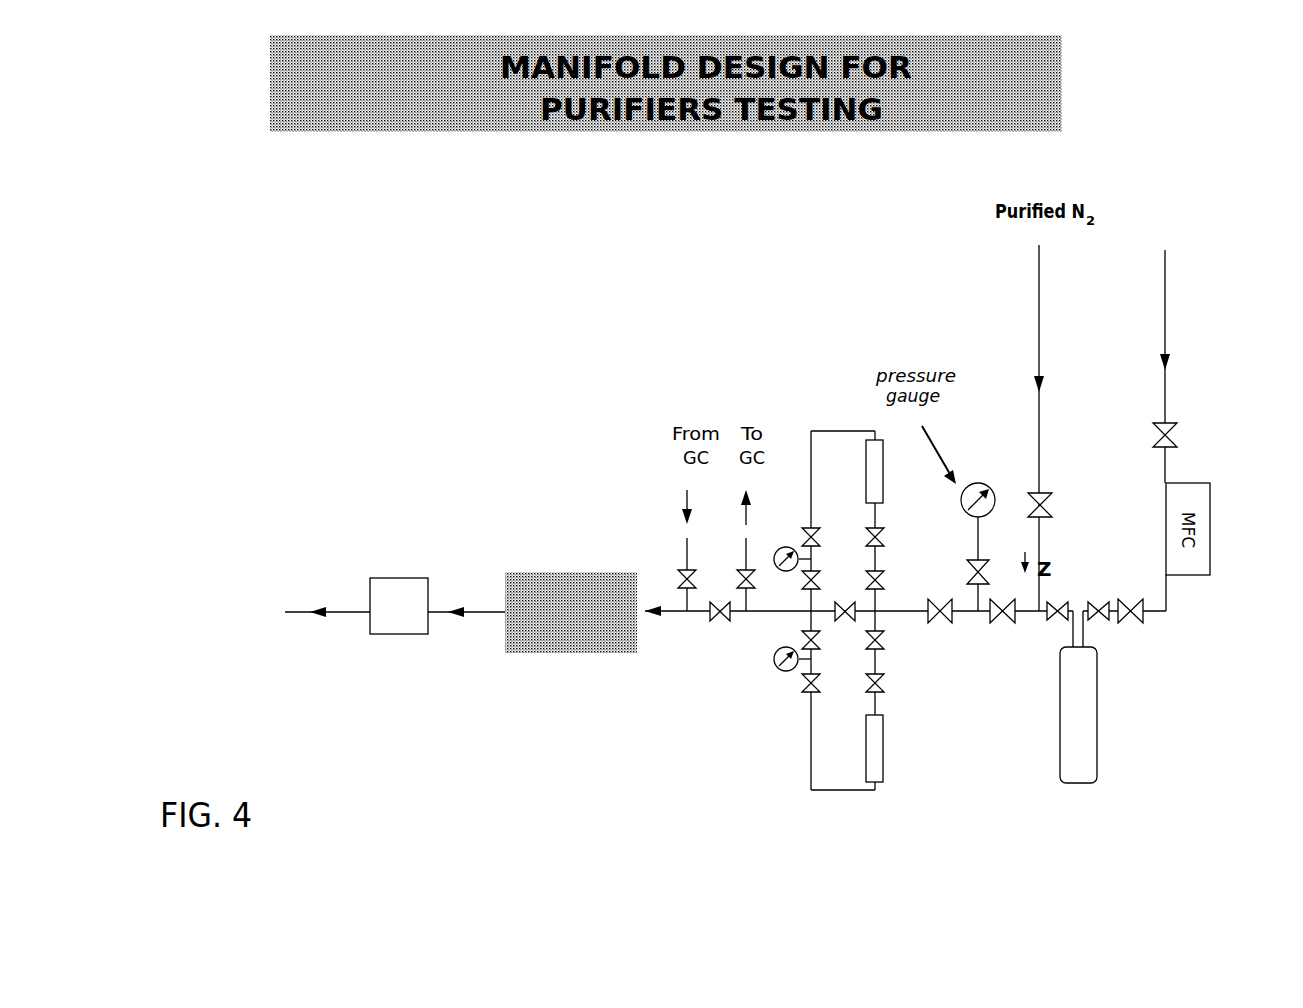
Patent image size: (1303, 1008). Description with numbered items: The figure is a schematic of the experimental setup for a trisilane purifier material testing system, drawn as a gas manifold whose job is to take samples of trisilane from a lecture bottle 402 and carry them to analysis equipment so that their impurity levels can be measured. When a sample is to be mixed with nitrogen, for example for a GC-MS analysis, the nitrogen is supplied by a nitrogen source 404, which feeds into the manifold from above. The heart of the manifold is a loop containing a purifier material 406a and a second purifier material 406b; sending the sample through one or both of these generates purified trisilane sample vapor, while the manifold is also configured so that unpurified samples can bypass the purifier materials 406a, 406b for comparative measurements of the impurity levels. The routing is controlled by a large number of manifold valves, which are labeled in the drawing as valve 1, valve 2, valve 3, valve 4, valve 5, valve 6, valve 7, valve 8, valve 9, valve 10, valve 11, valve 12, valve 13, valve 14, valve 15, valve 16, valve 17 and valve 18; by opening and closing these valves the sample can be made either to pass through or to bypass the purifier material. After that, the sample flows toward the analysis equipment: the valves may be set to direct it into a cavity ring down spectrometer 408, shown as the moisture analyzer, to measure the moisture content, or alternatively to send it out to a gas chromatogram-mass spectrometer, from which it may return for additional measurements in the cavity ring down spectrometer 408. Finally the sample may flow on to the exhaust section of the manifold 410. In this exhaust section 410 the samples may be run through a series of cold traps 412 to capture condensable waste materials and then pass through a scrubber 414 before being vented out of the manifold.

The lecture bottle 402 is at (1112, 703).
The nitrogen source 404 is at (1177, 207).
The purifier material 406a is at (852, 470).
The purifier material 406b is at (907, 748).
The cavity ring down spectrometer 408 is at (527, 572).
The exhaust section of the manifold 410 is at (484, 610).
The cold traps 412 is at (376, 578).
The scrubber 414 is at (227, 589).
The valve 1 is at (1173, 435).
The valve 2 is at (1130, 600).
The valve 3 is at (1046, 505).
The valve 4 is at (1002, 620).
The valve 5 is at (986, 571).
The valve 6 is at (940, 620).
The valve 7 is at (845, 603).
The valve 8 is at (720, 603).
The valve 9 is at (885, 638).
The valve 10 is at (889, 682).
The valve 11 is at (889, 582).
The valve 12 is at (889, 540).
The valve 13 is at (801, 637).
The valve 14 is at (802, 685).
The valve 15 is at (801, 582).
The valve 16 is at (801, 534).
The valve 17 is at (740, 574).
The valve 18 is at (678, 574).